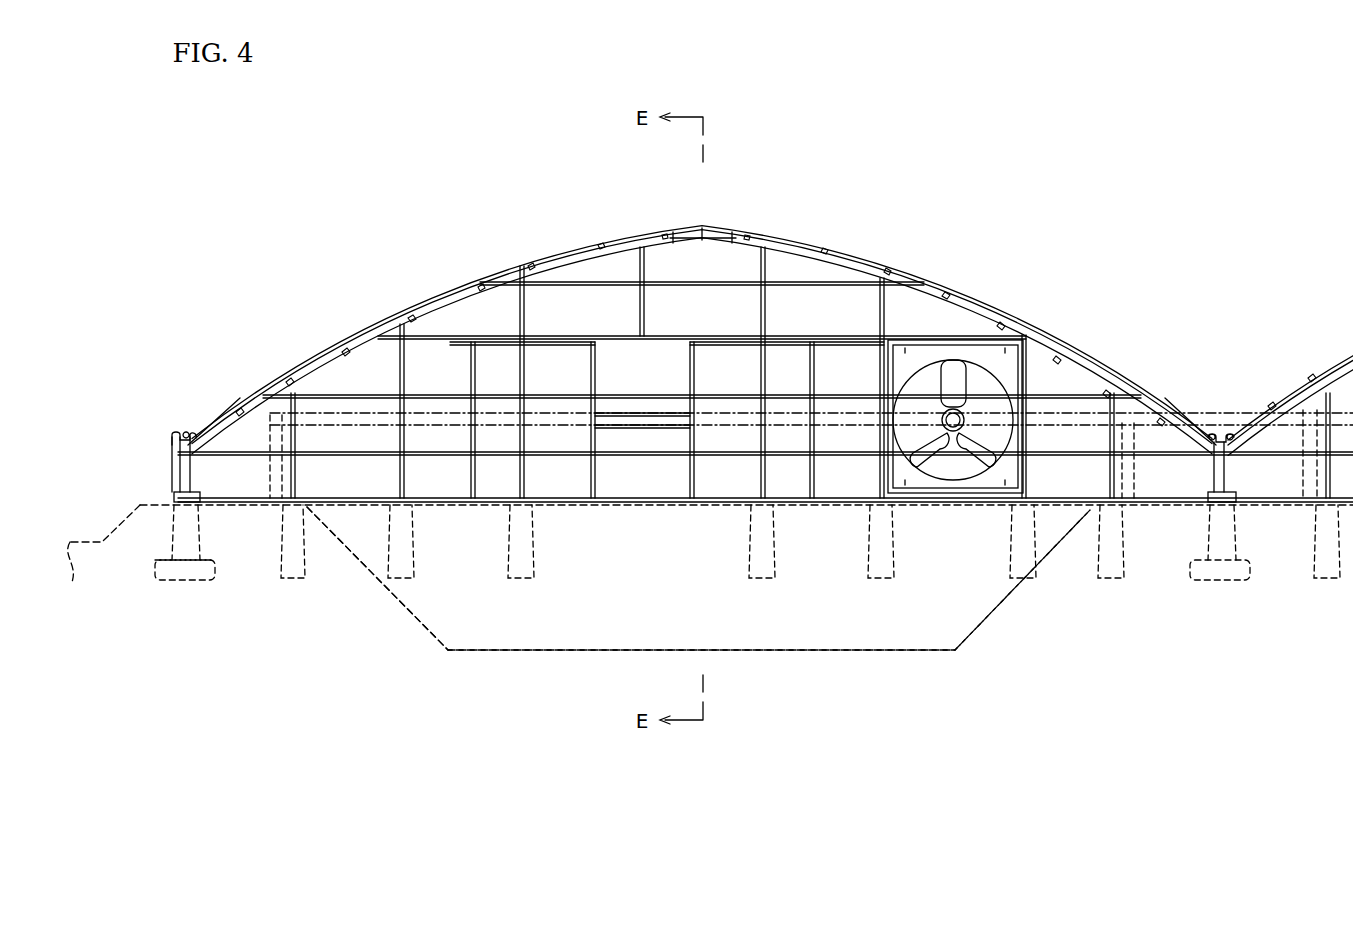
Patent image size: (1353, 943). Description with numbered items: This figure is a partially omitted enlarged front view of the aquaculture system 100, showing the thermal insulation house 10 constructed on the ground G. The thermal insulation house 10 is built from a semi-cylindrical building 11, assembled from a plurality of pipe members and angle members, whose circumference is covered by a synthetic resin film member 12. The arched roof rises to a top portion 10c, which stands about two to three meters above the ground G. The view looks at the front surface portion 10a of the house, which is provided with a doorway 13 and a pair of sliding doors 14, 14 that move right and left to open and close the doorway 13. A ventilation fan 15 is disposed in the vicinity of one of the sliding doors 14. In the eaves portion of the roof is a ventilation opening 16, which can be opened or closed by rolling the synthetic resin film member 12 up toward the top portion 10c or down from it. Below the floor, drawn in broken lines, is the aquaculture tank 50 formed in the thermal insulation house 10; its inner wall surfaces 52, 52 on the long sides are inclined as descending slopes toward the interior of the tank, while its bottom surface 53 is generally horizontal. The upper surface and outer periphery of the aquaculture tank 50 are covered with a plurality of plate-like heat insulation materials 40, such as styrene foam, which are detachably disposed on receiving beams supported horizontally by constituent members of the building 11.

The aquaculture system 100 is at (872, 170).
The thermal insulation house 10 is at (436, 275).
The front surface portion 10a is at (782, 300).
The top portion 10c is at (704, 222).
The semi-cylindrical building 11 is at (888, 258).
The synthetic resin film member 12 is at (527, 262).
The doorway 13 is at (652, 486).
The sliding door 14 is at (575, 480).
The ventilation fan 15 is at (935, 445).
The ventilation opening 16 is at (255, 430).
The heat insulation material 40 is at (348, 415).
The aquaculture tank 50 is at (376, 590).
The inner wall surface 52 is at (425, 615).
The bottom surface 53 is at (815, 650).
The ground G is at (148, 500).